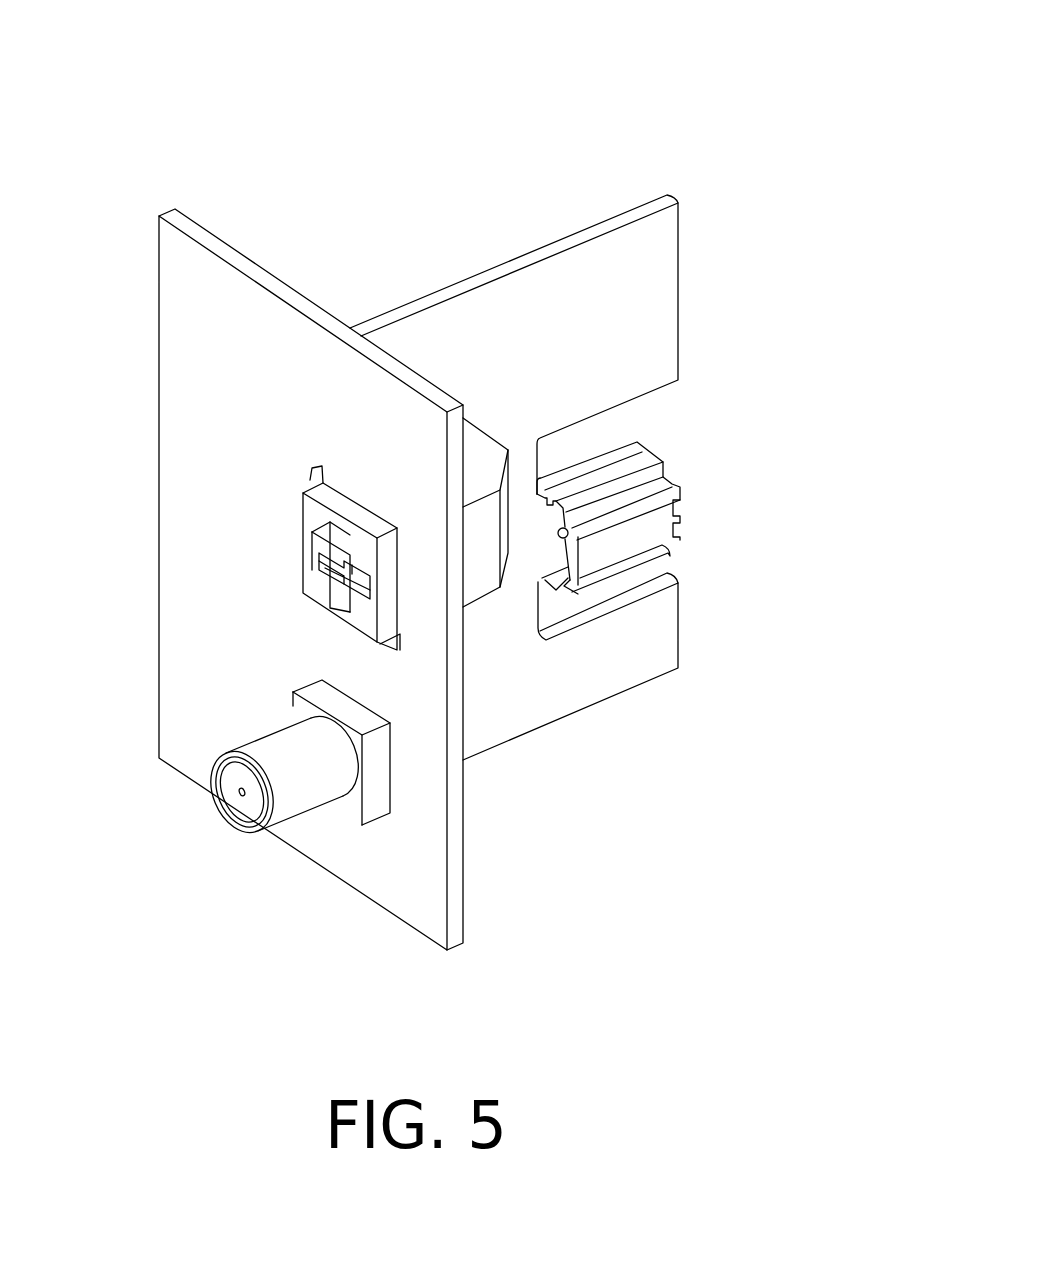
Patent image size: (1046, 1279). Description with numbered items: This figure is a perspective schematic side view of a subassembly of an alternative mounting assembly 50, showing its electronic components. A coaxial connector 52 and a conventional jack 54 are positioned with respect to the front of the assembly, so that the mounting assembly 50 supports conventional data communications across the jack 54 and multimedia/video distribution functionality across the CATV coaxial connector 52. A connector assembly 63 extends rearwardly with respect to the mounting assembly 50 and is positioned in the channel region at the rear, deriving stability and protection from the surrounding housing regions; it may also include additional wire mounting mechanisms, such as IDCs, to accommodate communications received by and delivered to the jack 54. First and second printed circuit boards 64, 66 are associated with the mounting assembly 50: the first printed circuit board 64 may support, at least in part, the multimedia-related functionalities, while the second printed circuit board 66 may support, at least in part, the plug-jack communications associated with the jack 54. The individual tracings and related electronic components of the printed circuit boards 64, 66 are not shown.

The mounting assembly 50 is at (456, 138).
The coaxial connector 52 is at (278, 748).
The jack 54 is at (312, 556).
The connector assembly 63 is at (653, 518).
The first printed circuit board 64 is at (394, 860).
The second printed circuit board 66 is at (635, 312).